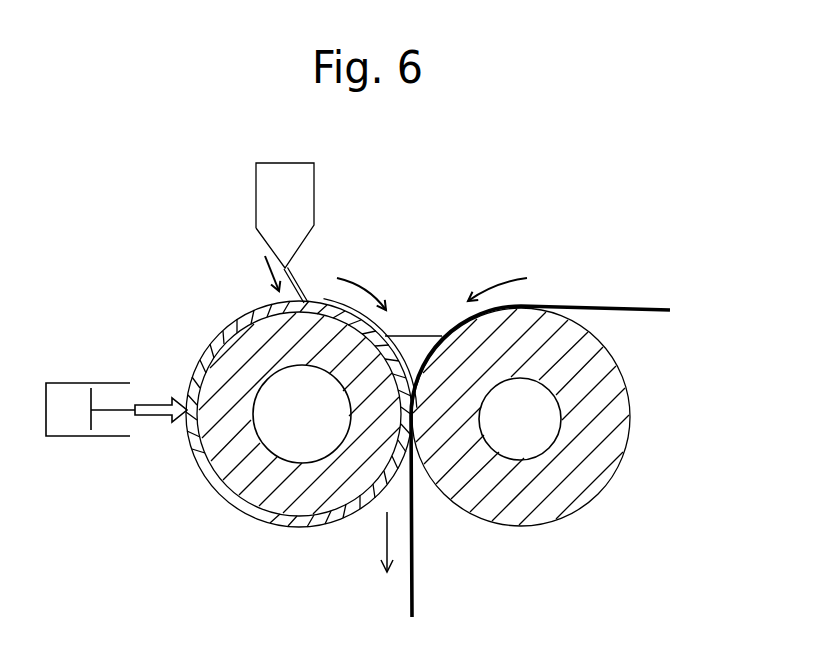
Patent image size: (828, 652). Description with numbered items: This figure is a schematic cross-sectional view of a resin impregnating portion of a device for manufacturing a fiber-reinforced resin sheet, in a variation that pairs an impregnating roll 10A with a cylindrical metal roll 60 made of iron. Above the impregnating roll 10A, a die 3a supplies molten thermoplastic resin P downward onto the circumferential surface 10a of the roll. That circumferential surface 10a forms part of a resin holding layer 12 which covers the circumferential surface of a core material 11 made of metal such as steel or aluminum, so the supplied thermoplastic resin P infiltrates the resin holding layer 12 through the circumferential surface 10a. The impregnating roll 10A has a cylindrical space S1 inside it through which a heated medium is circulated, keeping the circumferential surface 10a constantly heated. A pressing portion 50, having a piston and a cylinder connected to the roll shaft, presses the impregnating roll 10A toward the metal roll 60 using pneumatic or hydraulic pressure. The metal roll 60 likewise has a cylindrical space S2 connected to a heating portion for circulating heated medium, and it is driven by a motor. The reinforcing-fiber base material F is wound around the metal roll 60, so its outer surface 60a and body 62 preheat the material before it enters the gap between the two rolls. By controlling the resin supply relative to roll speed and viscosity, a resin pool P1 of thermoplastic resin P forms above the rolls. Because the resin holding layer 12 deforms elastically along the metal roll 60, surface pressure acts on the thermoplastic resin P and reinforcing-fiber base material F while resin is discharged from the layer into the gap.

The die 3a is at (268, 193).
The thermoplastic resin P is at (300, 282).
The resin pool P1 is at (418, 340).
The impregnating roll 10A is at (280, 422).
The circumferential surface 10a is at (313, 523).
The core material 11 is at (255, 475).
The resin holding layer 12 is at (200, 457).
The cylindrical space S1 is at (298, 447).
The pressing portion 50 is at (85, 377).
The reinforcing-fiber base material F is at (538, 303).
The metal roll 60 is at (569, 440).
The heating roller surface 60a is at (582, 508).
The heating roller body 62 is at (617, 410).
The cylindrical space S2 is at (528, 445).